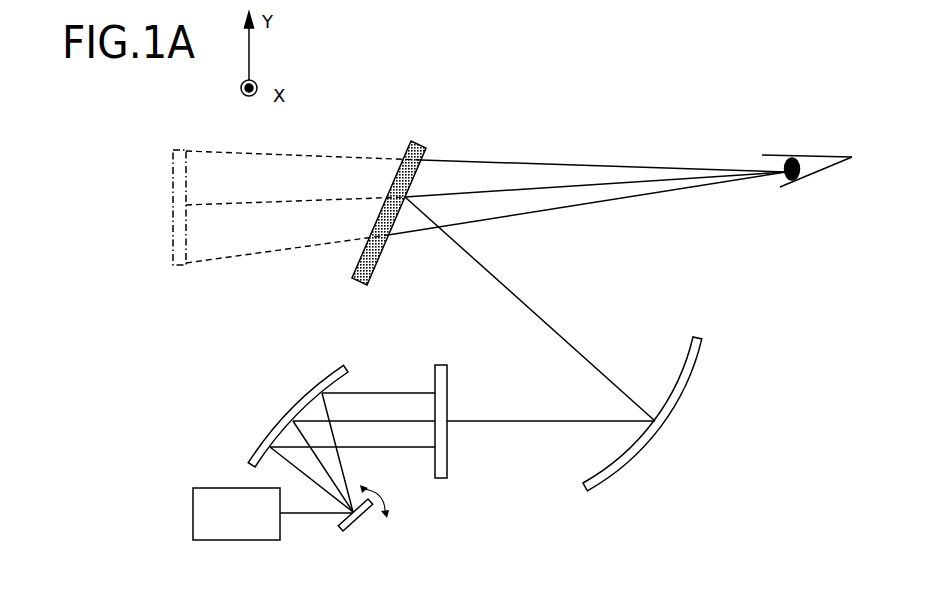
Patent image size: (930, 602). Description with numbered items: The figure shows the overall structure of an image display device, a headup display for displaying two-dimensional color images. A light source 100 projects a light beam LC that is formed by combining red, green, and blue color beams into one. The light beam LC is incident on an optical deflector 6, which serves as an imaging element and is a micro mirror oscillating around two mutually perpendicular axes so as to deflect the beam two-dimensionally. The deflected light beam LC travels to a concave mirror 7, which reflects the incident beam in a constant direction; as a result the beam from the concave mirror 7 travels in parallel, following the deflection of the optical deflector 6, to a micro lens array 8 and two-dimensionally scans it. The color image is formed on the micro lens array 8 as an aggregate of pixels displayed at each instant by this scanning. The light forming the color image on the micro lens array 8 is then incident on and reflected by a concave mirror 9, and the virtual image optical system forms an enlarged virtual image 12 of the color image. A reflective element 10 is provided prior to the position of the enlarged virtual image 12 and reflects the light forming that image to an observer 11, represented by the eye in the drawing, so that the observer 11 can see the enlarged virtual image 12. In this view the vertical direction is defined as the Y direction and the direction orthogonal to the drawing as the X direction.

The optical deflector 6 is at (360, 521).
The concave mirror 7 is at (293, 408).
The micro lens array 8 is at (442, 402).
The concave mirror 9 is at (683, 390).
The reflective element 10 is at (426, 144).
The observer 11 is at (797, 156).
The enlarged virtual image 12 is at (177, 150).
The light source 100 is at (240, 523).
The light beam LC is at (303, 520).